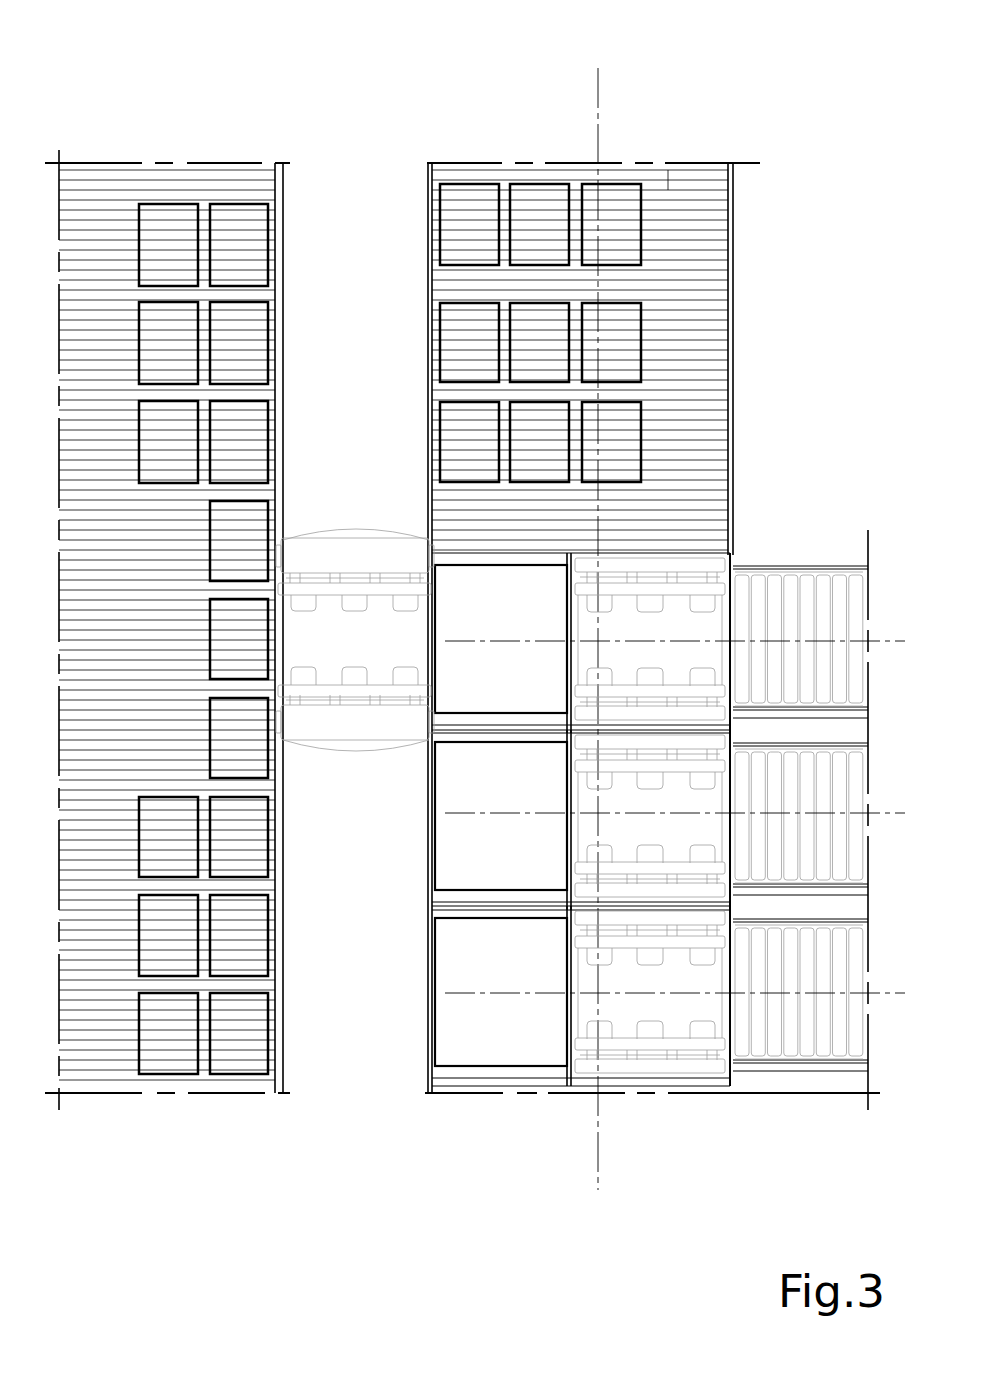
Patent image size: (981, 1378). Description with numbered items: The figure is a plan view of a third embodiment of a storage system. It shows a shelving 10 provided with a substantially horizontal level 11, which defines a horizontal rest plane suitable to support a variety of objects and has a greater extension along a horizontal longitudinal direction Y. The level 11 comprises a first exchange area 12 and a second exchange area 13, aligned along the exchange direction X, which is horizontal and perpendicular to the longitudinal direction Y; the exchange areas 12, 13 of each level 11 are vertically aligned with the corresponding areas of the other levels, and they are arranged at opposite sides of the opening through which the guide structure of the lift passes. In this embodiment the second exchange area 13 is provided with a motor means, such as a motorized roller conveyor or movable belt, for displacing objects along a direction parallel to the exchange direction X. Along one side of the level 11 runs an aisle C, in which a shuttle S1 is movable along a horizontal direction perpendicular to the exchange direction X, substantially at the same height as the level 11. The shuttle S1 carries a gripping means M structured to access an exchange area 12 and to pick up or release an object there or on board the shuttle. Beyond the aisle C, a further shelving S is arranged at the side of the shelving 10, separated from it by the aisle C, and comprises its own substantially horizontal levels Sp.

The horizontal level Sp is at (103, 197).
The further shelving S is at (192, 150).
The shelving 10 is at (703, 148).
The level 11 is at (668, 190).
The longitudinal direction Y is at (585, 627).
The aisle C is at (360, 388).
The exchange direction X is at (675, 808).
The first exchange area 12 is at (520, 627).
The second exchange area 13 is at (822, 631).
The gripping means M is at (322, 630).
The shuttle S1 is at (381, 745).